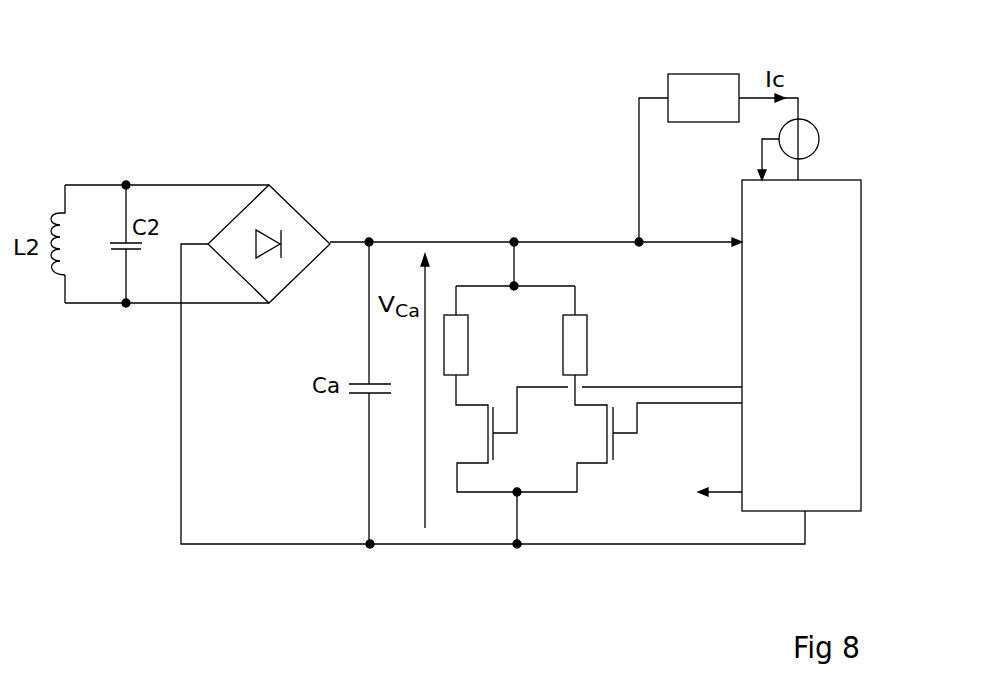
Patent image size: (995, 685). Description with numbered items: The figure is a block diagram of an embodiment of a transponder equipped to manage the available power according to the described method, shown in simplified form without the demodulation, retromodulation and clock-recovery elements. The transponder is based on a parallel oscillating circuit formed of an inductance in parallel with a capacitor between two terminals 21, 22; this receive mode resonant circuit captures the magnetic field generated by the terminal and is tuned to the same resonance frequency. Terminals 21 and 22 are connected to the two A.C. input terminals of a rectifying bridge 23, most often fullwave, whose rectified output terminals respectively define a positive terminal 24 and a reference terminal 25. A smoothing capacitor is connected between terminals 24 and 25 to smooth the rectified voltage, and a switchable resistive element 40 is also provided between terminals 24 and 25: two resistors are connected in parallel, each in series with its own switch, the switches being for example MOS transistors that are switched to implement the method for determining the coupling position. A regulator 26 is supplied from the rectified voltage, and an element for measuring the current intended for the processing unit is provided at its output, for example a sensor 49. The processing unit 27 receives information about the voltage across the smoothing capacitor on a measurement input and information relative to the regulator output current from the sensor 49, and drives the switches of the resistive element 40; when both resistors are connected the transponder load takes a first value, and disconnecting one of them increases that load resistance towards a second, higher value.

The terminal 21 is at (126, 185).
The terminal 22 is at (126, 303).
The rectifying bridge 23 is at (303, 215).
The positive terminal 24 is at (369, 242).
The reference terminal 25 is at (371, 544).
The regulator 26 is at (692, 74).
The processing unit 27 is at (832, 180).
The switchable resistive element 40 is at (504, 332).
The sensor 49 is at (819, 133).